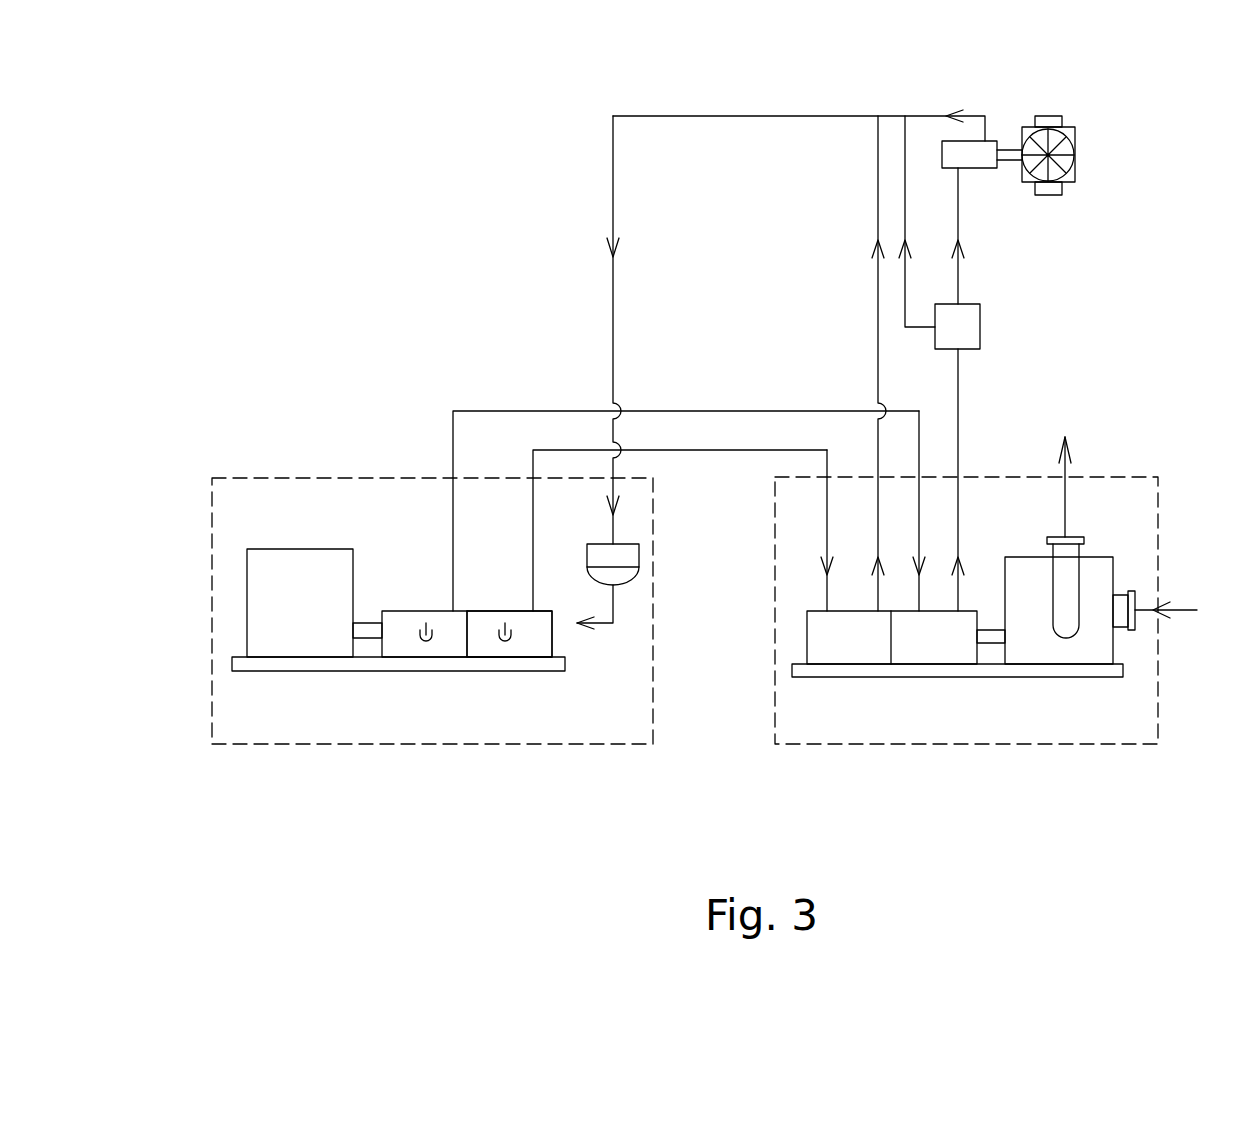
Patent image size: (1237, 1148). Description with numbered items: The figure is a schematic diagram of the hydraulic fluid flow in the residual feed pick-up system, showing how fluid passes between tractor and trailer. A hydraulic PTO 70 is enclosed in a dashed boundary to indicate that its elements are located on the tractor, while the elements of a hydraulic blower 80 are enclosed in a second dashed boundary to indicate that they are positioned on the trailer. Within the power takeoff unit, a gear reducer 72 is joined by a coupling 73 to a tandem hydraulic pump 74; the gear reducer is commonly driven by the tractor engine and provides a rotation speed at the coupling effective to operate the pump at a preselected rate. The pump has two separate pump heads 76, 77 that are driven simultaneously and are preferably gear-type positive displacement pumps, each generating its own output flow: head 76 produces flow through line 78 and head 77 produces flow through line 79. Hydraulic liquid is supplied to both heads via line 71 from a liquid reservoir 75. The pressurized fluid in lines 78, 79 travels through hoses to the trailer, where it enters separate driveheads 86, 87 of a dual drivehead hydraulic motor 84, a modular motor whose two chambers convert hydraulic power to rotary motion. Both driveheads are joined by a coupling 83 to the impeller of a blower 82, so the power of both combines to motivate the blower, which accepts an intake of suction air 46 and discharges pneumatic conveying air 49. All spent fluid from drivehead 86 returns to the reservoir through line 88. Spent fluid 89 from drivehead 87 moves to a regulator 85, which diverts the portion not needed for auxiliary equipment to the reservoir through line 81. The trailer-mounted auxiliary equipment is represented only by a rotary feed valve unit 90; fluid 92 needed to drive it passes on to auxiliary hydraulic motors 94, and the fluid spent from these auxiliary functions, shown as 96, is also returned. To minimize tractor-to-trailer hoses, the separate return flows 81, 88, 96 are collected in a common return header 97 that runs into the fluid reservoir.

The suction air 46 is at (1150, 606).
The pneumatic conveying air 49 is at (1065, 492).
The hydraulic PTO 70 is at (443, 746).
The line 71 is at (613, 603).
The gear reducer 72 is at (292, 549).
The coupling 73 is at (366, 623).
The tandem hydraulic pump 74 is at (481, 611).
The liquid reservoir 75 is at (640, 565).
The pump head 76 is at (382, 645).
The pump head 77 is at (547, 611).
The line 78 is at (453, 560).
The line 79 is at (533, 552).
The hydraulic blower 80 is at (963, 746).
The line 81 is at (905, 180).
The blower 82 is at (1113, 562).
The coupling 83 is at (990, 644).
The dual drivehead hydraulic motor 84 is at (836, 611).
The regulator 85 is at (981, 322).
The drivehead 86 is at (807, 648).
The drivehead 87 is at (972, 611).
The line 88 is at (878, 365).
The spent fluid 89 is at (958, 398).
The rotary feed valve unit 90 is at (1076, 170).
The fluid 92 is at (958, 176).
The auxiliary hydraulic motors 94 is at (998, 141).
The spent fluid 96 is at (922, 116).
The common return header 97 is at (613, 270).